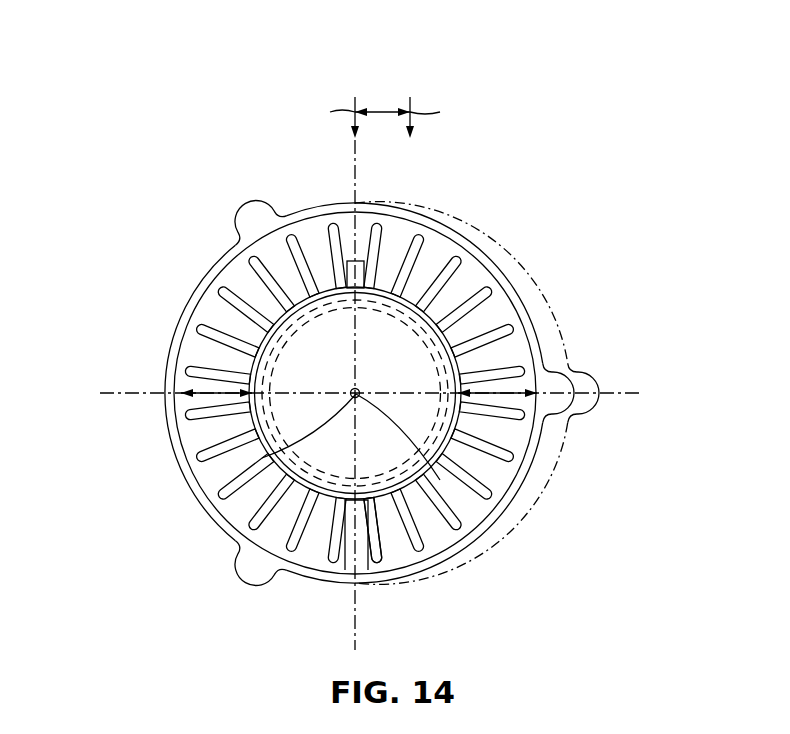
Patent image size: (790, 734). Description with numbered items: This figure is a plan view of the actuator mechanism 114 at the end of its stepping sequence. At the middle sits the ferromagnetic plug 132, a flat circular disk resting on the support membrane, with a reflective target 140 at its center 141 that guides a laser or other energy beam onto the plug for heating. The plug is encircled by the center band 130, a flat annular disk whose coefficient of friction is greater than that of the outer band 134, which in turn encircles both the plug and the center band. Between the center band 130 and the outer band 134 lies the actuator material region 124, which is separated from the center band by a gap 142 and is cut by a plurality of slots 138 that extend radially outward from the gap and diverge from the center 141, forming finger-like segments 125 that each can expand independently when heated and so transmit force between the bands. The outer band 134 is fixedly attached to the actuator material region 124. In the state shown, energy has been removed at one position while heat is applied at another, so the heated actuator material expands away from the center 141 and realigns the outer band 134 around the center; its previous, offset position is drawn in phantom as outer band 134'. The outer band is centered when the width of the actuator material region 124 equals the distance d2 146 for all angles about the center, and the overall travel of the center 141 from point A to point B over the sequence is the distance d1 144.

The actuator mechanism 114 is at (195, 198).
The actuator material region 124 is at (467, 283).
The finger-like segments 125 is at (318, 243).
The center band 130 is at (440, 345).
The ferromagnetic plug 132 is at (341, 380).
The outer band 134 is at (435, 392).
The outer band in previous position 134' is at (519, 393).
The slots 138 is at (464, 473).
The reflective target 140 is at (440, 480).
The center 141 is at (262, 458).
The gap 142 is at (384, 508).
The distance d1 144 is at (391, 108).
The distance d2 146 is at (606, 367).